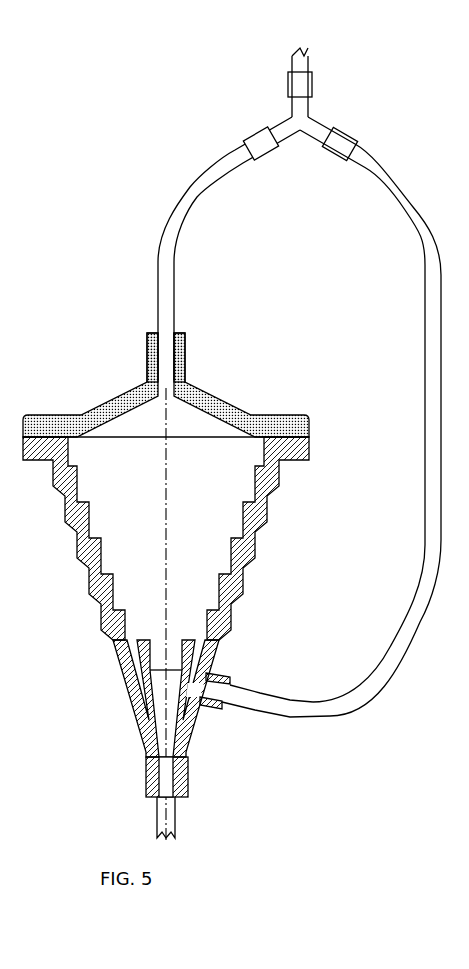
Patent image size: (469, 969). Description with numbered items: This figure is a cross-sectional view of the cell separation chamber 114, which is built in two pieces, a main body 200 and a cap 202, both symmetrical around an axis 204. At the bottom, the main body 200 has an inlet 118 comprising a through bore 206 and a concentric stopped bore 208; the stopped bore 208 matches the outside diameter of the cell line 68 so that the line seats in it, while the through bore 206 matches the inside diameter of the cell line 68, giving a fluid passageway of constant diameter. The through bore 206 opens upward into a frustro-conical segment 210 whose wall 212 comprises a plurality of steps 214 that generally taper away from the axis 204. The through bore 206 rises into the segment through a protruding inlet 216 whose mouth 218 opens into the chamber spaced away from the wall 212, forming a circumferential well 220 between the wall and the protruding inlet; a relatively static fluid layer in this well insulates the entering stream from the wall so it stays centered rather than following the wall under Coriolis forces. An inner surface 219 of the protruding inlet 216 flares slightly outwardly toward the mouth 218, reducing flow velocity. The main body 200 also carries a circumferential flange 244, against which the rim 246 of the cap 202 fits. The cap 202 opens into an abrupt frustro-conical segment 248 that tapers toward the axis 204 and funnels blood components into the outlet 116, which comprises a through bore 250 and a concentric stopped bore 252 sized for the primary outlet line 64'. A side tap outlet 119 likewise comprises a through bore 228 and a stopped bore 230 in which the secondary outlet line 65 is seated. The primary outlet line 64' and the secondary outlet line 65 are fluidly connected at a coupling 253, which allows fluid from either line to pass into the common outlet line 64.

The common outlet line 64 is at (323, 82).
The primary outlet line 64' is at (214, 189).
The secondary outlet line 65 is at (418, 626).
The cell line 68 is at (157, 815).
The cell separation chamber 114 is at (294, 382).
The outlet 116 is at (177, 326).
The inlet 118 is at (179, 797).
The side tap outlet 119 is at (231, 679).
The main body 200 is at (191, 637).
The cap 202 is at (194, 368).
The axis 204 is at (141, 341).
The through bore 206 is at (237, 793).
The stopped bore 208 is at (179, 797).
The frustro-conical segment 210 is at (127, 698).
The wall 212 is at (133, 685).
The steps 214 is at (248, 510).
The protruding inlet 216 is at (183, 668).
The mouth 218 is at (150, 668).
The inner surface 219 is at (149, 672).
The circumferential well 220 is at (146, 698).
The through bore 228 is at (212, 705).
The stopped bore 230 is at (220, 692).
The circumferential flange 244 is at (193, 538).
The rim 246 is at (194, 385).
The abrupt frustro-conical segment 248 is at (189, 412).
The through bore 250 is at (163, 394).
The stopped bore 252 is at (147, 356).
The coupling 253 is at (336, 130).